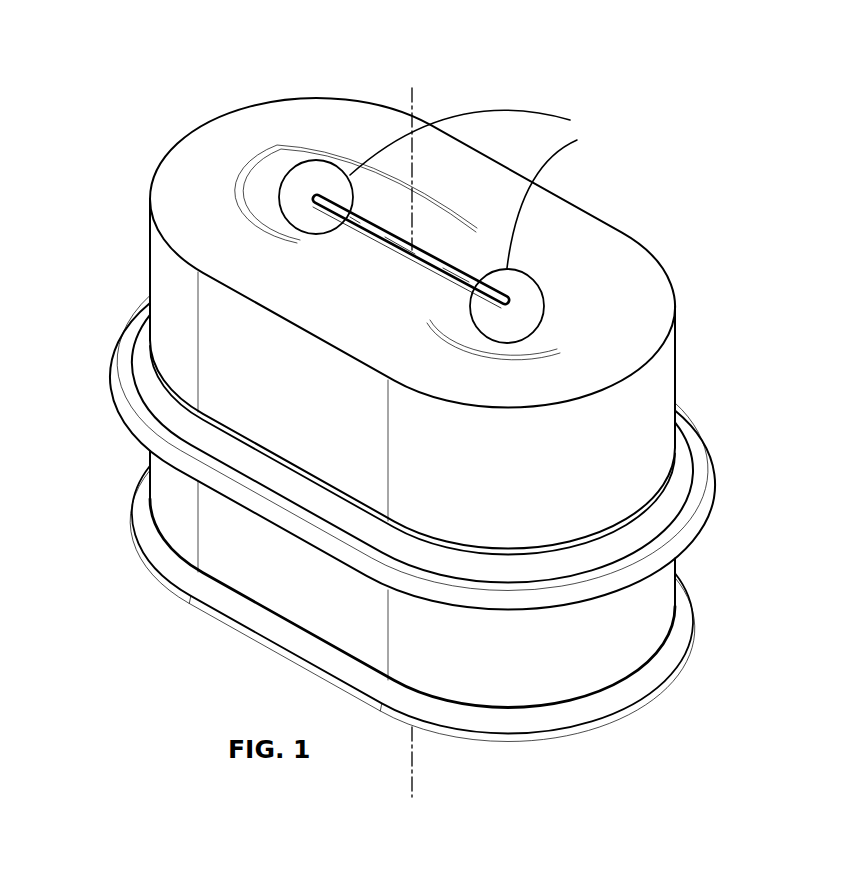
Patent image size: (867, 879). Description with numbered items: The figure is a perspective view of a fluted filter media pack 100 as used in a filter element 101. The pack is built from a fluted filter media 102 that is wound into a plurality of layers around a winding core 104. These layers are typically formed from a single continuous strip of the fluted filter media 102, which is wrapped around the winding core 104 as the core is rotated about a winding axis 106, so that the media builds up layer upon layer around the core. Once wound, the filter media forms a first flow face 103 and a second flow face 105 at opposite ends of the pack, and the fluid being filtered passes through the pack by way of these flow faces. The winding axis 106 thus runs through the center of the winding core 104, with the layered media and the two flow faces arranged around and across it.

The fluted filter media pack 100 is at (313, 90).
The filter element 101 is at (740, 167).
The fluted filter media 102 is at (624, 255).
The first flow face 103 is at (572, 216).
The winding core 104 is at (417, 222).
The second flow face 105 is at (520, 740).
The winding axis 106 is at (414, 97).